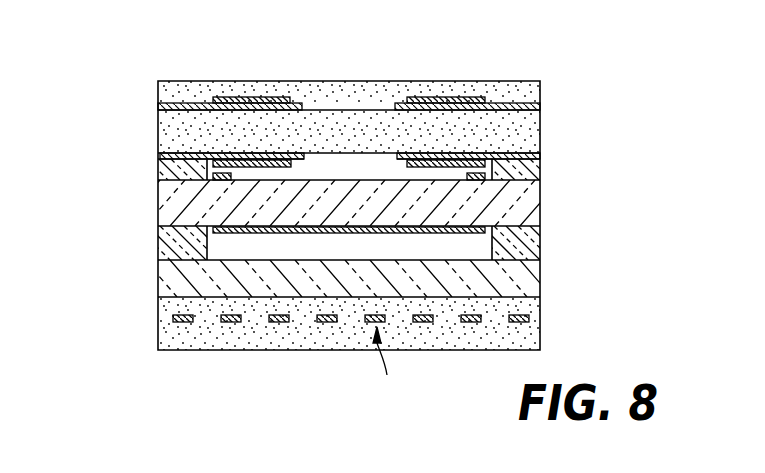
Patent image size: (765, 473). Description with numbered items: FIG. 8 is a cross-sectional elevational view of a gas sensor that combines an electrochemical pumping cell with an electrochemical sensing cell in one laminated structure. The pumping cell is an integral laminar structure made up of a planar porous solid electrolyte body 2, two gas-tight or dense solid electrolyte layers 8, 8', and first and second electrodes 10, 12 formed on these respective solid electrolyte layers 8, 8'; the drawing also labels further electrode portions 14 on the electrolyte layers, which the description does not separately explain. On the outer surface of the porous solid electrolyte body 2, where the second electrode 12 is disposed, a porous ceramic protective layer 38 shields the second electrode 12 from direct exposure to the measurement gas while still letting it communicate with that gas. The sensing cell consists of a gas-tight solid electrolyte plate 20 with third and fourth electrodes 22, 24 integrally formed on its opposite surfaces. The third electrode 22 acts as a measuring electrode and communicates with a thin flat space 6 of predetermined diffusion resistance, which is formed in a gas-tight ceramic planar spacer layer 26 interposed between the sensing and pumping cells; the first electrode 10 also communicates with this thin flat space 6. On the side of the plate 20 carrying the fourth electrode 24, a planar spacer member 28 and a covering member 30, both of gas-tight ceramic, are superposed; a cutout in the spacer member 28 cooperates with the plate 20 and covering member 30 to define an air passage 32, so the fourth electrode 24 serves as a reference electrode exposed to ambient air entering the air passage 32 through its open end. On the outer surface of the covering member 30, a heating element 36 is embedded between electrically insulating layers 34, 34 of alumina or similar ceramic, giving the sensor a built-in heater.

The porous solid electrolyte body 2 is at (173, 132).
The thin flat space 6 is at (352, 168).
The solid electrolyte layer 8 is at (380, 156).
The solid electrolyte layer 8' is at (364, 92).
The first electrode 10 is at (442, 157).
The second electrode 12 is at (457, 99).
The electrode 14 is at (309, 157).
The gas-tight solid electrolyte plate 20 is at (175, 200).
The third electrode 22 is at (477, 180).
The fourth electrode 24 is at (460, 233).
The planar spacer layer 26 is at (175, 160).
The planar spacer member 28 is at (175, 236).
The covering member 30 is at (175, 272).
The air passage 32 is at (310, 247).
The electrically insulating layer 34 is at (180, 312).
The heating element 36 is at (395, 365).
The porous ceramic protective layer 38 is at (170, 93).